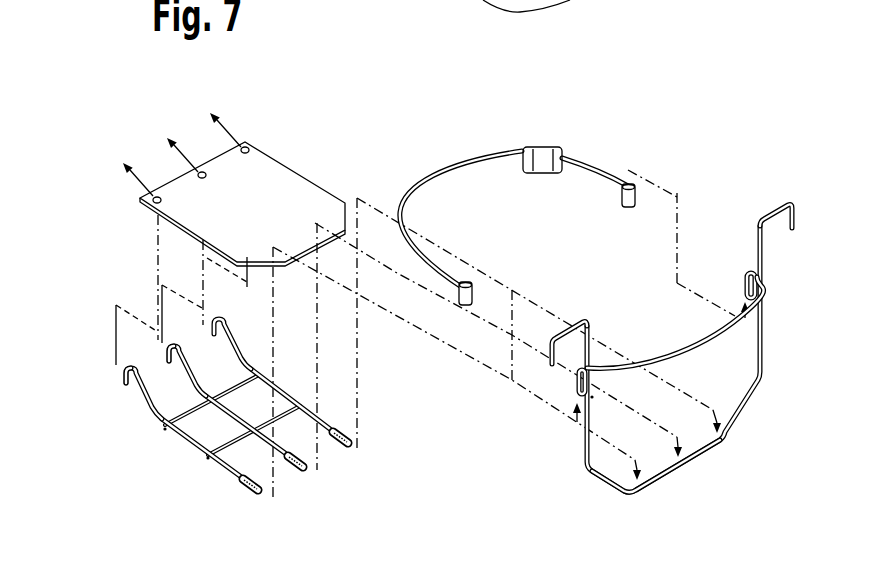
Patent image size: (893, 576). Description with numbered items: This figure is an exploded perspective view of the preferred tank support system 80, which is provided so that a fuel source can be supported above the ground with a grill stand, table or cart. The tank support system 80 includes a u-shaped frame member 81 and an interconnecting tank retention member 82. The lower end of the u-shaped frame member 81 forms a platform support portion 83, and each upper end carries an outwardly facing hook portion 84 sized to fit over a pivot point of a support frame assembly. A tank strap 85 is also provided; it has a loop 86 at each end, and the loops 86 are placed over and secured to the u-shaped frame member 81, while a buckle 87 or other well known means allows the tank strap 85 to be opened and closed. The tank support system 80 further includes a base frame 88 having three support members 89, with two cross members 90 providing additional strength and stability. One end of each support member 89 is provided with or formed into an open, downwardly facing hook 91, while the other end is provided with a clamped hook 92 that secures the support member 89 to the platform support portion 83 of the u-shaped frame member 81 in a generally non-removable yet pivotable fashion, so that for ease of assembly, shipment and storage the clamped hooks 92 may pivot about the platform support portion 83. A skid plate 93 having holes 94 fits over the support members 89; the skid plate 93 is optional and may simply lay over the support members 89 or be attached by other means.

The tank support system 80 is at (373, 106).
The u-shaped frame member 81 is at (785, 325).
The tank retention member 82 is at (697, 343).
The platform support portion 83 is at (703, 455).
The hook portion 84 is at (187, 368).
The tank strap 85 is at (490, 150).
The loop 86 is at (463, 283).
The buckle 87 is at (547, 152).
The base frame 88 is at (162, 466).
The support member 89 is at (230, 470).
The cross member 90 is at (178, 408).
The hook 91 is at (167, 353).
The clamped hook 92 is at (243, 493).
The skid plate 93 is at (276, 162).
The hole 94 is at (163, 194).